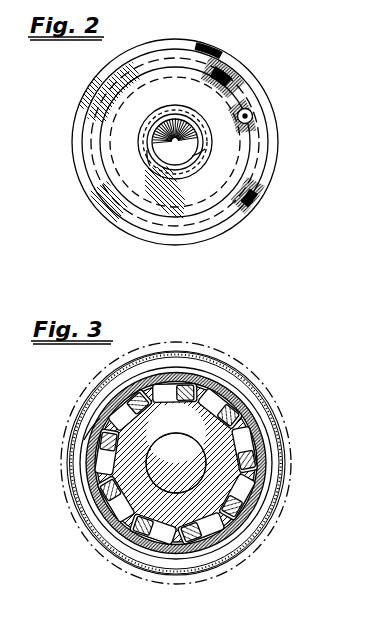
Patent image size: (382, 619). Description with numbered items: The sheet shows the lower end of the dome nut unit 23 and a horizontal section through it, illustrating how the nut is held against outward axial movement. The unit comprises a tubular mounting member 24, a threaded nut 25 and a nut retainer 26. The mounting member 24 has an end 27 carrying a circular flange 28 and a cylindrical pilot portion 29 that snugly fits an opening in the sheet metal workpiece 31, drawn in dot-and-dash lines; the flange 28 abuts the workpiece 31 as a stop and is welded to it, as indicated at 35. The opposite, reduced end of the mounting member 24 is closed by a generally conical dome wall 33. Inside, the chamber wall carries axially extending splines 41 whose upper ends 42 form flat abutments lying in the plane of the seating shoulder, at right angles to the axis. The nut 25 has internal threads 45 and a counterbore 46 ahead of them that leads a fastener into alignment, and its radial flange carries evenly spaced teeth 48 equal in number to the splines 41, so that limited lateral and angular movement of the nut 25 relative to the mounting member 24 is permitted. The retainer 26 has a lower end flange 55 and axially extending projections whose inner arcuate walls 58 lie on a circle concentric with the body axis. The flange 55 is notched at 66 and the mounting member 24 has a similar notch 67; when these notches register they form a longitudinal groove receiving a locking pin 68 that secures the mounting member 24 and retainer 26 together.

In FIG. 2, the dome nut unit 23 is at (82, 96).
In FIG. 2, the tubular mounting member 24 is at (229, 48).
In FIG. 3, the tubular mounting member 24 is at (191, 372).
In FIG. 2, the threaded nut 25 is at (155, 112).
In FIG. 3, the threaded nut 25 is at (192, 485).
In FIG. 2, the nut retainer 26 is at (229, 95).
In FIG. 3, the end of mounting member 27 is at (92, 430).
In FIG. 2, the circular flange 28 is at (82, 117).
In FIG. 3, the circular flange 28 is at (100, 400).
In FIG. 2, the cylindrical pilot portion 29 is at (92, 157).
In FIG. 3, the workpiece 31 is at (167, 352).
In FIG. 2, the conical dome wall 33 is at (173, 118).
In FIG. 3, the weld 35 is at (217, 368).
In FIG. 3, the splines 41 is at (230, 400).
In FIG. 3, the upper ends of splines 42 is at (262, 424).
In FIG. 2, the internal threads 45 is at (175, 142).
In FIG. 2, the counterbore 46 is at (150, 160).
In FIG. 3, the counterbore 46 is at (202, 467).
In FIG. 3, the teeth 48 is at (125, 523).
In FIG. 2, the lower end flange 55 is at (133, 82).
In FIG. 2, the inner arcuate walls 58 is at (194, 153).
In FIG. 2, the notch 66 is at (241, 131).
In FIG. 2, the notch 67 is at (254, 115).
In FIG. 2, the locking pin 68 is at (250, 109).